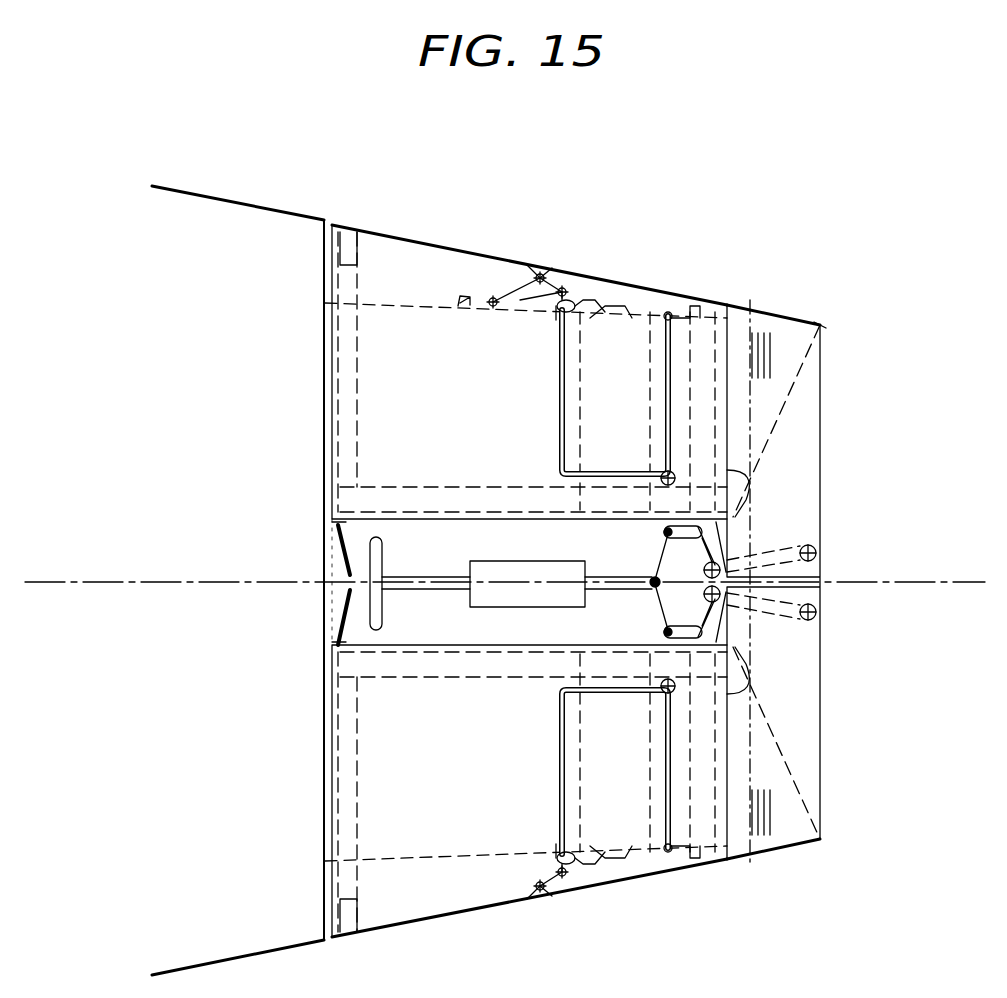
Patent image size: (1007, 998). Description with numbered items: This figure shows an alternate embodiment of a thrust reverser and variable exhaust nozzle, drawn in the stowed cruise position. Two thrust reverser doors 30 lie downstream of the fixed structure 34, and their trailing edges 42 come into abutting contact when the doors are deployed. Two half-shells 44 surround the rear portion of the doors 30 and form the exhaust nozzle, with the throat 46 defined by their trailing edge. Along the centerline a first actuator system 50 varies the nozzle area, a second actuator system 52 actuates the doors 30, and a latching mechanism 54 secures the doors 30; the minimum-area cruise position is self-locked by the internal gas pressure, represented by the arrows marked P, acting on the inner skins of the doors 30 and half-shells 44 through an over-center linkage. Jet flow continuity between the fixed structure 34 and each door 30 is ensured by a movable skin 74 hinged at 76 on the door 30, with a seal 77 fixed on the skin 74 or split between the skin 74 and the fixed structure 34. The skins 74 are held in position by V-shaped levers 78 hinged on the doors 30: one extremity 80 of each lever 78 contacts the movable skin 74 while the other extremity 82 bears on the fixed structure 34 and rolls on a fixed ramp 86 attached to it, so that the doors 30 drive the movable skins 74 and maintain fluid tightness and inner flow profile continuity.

The thrust reverser door 30 is at (370, 230).
The fixed structure 34 is at (253, 220).
The trailing edge 42 is at (793, 383).
The half-shell 44 is at (773, 313).
The throat 46 is at (822, 326).
The first actuator system 50 is at (630, 590).
The second actuator system 52 is at (532, 607).
The latching mechanism 54 is at (338, 530).
The movable skin 74 is at (612, 318).
The hinge 76 is at (655, 470).
The seal 77 is at (560, 325).
The lever 78 is at (550, 273).
The extremity 80 is at (572, 298).
The extremity 82 is at (490, 306).
The fixed ramp 86 is at (458, 300).